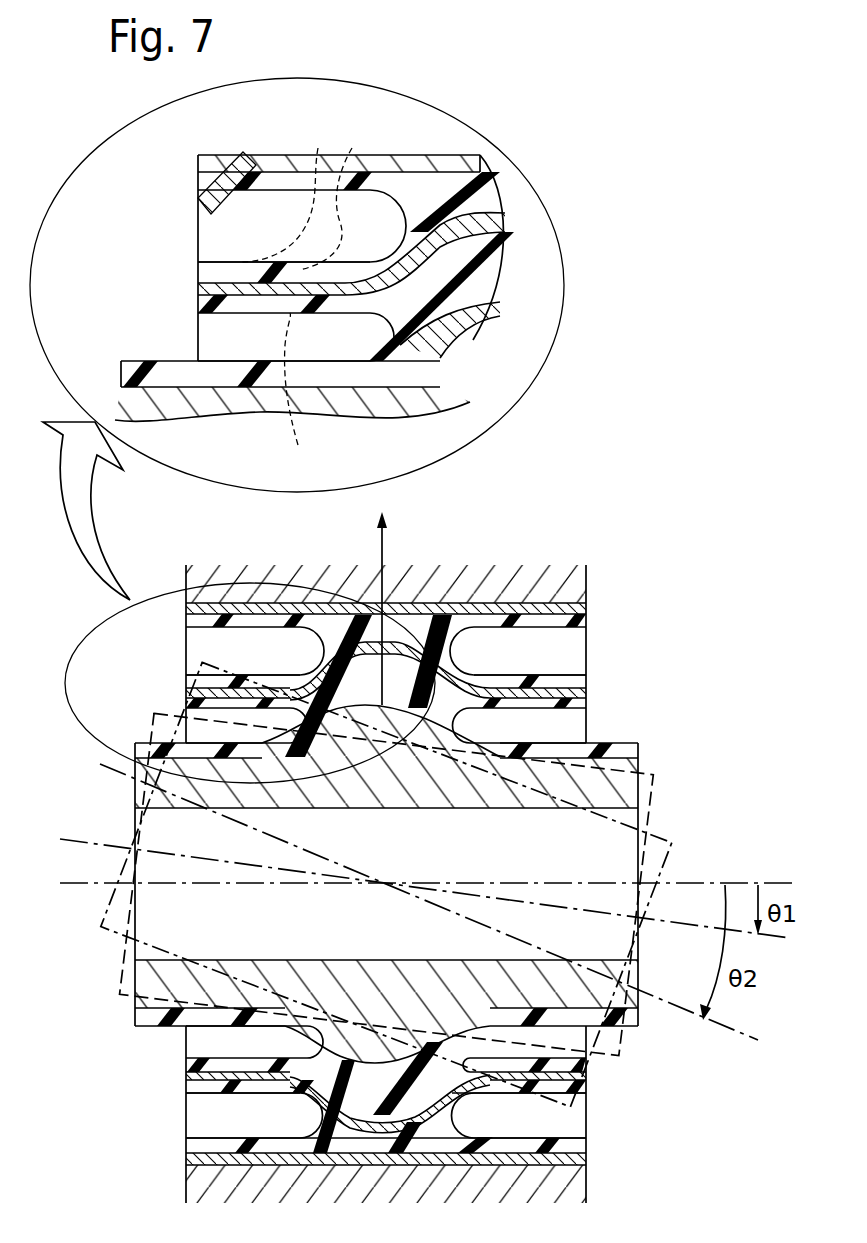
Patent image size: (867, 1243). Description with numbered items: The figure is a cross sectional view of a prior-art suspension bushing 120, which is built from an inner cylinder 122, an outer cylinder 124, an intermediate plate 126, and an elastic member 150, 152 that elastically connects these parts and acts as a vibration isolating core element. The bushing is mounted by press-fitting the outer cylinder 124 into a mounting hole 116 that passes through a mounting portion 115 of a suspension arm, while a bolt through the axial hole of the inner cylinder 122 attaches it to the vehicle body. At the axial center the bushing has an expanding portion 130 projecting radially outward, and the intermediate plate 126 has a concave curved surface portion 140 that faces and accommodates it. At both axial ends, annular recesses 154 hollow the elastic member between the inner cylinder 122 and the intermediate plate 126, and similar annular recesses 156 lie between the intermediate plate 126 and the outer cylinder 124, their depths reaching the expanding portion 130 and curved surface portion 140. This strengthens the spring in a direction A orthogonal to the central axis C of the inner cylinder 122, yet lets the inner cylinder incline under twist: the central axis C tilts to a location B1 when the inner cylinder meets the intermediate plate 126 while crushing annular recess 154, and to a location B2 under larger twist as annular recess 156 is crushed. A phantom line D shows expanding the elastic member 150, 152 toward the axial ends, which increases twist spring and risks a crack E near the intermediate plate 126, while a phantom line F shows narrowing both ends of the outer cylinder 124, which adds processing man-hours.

The mounting portion 115 is at (210, 1185).
The mounting hole 116 is at (230, 1160).
The suspension bushing 120 is at (96, 966).
The inner cylinder 122 is at (612, 796).
The outer cylinder 124 is at (600, 603).
The intermediate plate 126 is at (600, 690).
The expanding portion 130 is at (393, 707).
The curved surface portion 140 is at (404, 644).
The elastic member 150 is at (410, 678).
The elastic member 152 is at (440, 660).
The annular recess 154 is at (197, 730).
The annular recess 156 is at (203, 639).
The direction A is at (393, 603).
The central axis C is at (438, 874).
The location B1 is at (442, 900).
The location B2 is at (443, 908).
The phantom line D is at (285, 289).
The crack E is at (329, 193).
The phantom line F is at (200, 194).